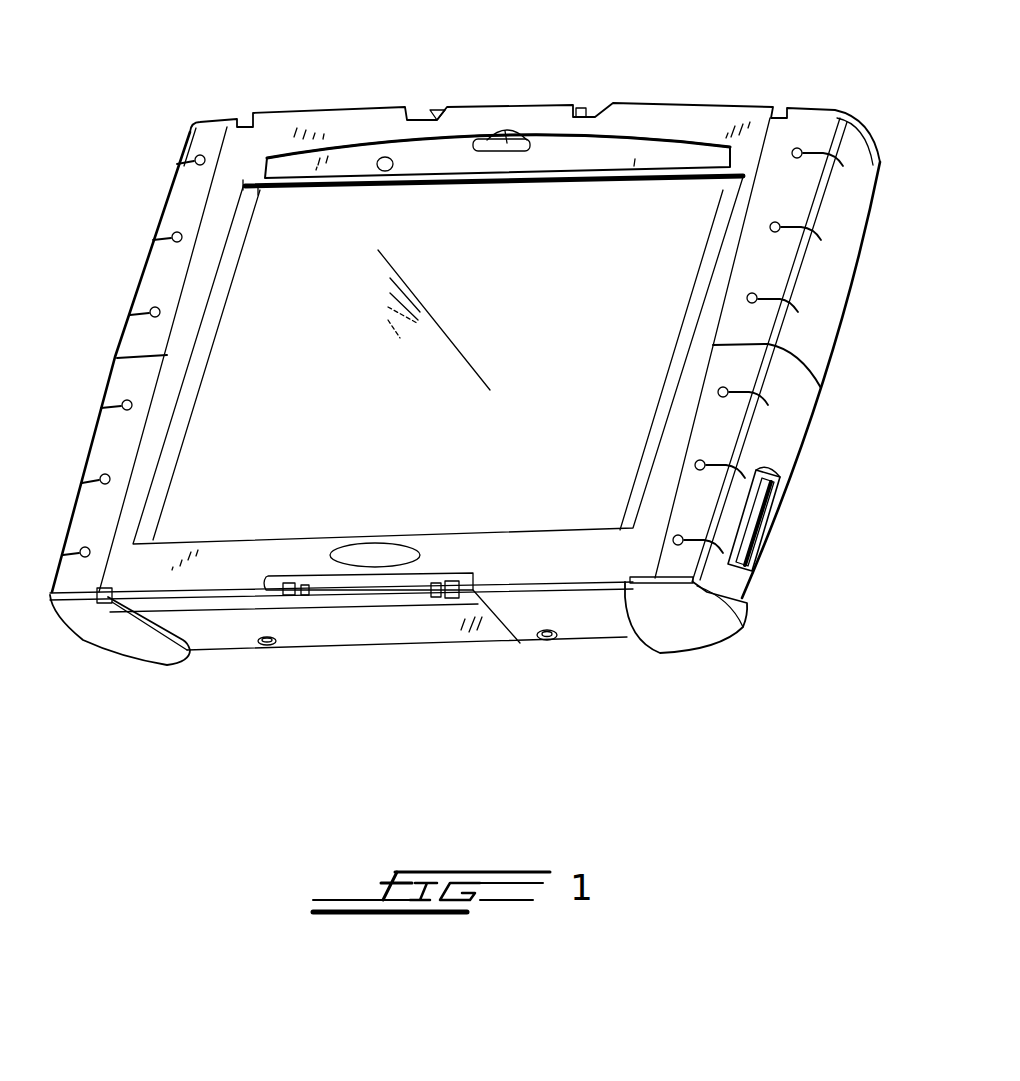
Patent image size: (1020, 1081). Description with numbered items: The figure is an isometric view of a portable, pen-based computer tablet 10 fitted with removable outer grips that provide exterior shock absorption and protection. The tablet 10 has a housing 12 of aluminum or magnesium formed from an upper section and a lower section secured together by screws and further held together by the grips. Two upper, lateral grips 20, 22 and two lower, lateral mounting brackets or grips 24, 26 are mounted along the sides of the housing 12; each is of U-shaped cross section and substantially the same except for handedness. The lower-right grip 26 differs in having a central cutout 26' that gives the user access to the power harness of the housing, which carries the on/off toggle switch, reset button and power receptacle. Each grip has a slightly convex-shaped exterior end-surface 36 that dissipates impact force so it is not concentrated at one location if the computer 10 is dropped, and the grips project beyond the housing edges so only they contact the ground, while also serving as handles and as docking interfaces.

The portable pen-based computer tablet 10 is at (752, 95).
The housing 12 is at (679, 117).
The upper lateral grip 20 is at (141, 238).
The upper lateral grip 22 is at (852, 187).
The lower lateral mounting bracket or grip 24 is at (80, 572).
The lower-right grip 26 is at (826, 419).
The central cutout 26' is at (798, 545).
The convex-shaped exterior end-surface 36 is at (153, 645).